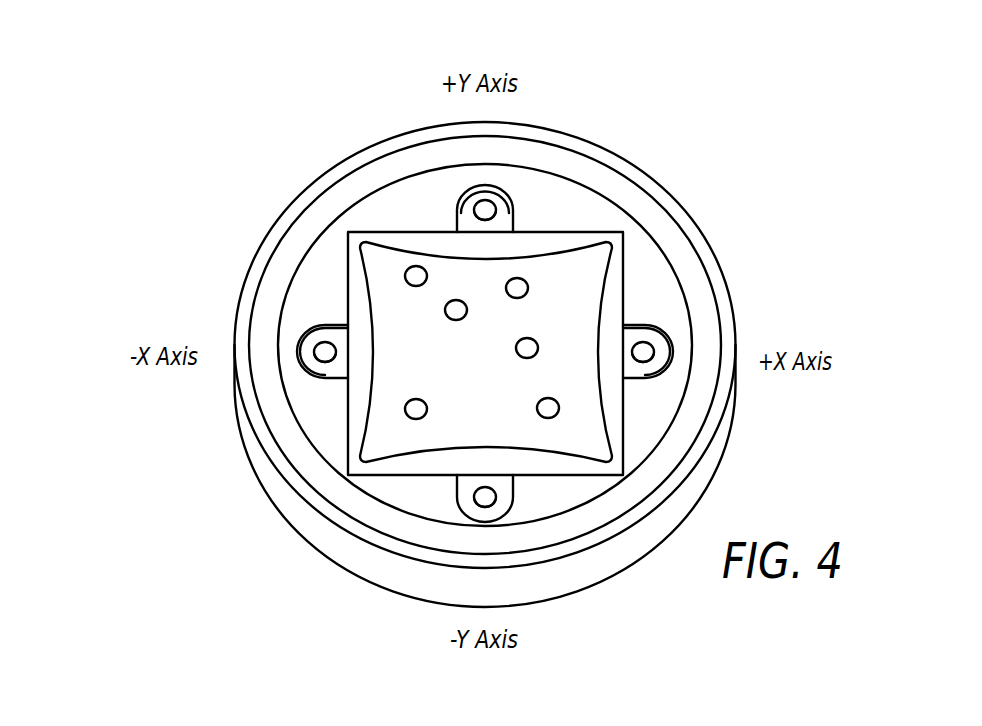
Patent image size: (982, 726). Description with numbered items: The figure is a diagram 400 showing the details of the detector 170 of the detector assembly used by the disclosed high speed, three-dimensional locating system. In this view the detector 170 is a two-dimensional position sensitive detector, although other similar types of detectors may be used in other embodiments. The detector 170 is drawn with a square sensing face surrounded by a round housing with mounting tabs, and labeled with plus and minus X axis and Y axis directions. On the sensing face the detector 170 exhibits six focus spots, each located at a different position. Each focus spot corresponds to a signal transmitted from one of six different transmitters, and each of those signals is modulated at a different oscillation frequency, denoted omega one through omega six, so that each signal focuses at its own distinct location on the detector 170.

The diagram 400 is at (753, 163).
The detector 170 is at (616, 290).